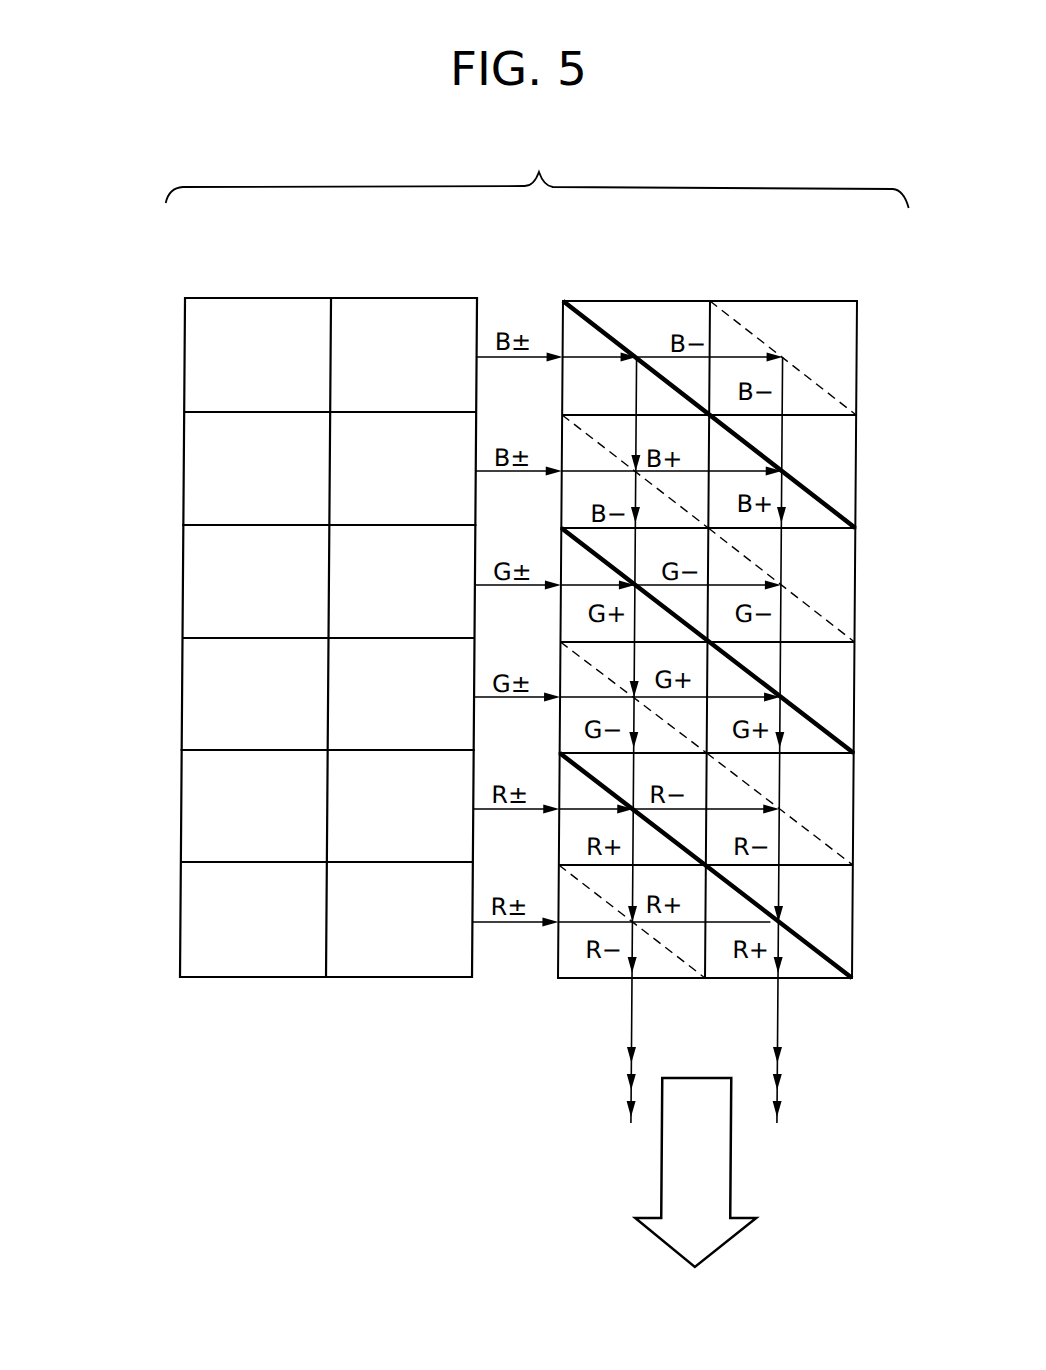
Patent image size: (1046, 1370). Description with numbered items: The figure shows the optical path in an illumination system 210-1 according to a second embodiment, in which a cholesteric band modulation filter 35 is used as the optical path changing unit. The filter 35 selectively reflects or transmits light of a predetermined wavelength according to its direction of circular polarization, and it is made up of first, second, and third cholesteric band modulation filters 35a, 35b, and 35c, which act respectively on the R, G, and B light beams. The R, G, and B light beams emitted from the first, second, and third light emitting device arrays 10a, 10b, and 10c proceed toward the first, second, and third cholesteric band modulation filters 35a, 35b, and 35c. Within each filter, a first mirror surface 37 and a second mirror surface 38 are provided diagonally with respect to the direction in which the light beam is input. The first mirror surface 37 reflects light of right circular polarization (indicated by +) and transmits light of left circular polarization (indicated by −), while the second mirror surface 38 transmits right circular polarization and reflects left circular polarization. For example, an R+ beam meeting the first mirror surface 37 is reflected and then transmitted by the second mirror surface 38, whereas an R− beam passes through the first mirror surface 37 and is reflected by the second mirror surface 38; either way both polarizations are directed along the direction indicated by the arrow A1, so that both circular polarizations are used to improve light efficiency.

The first light emitting device array 10a is at (197, 842).
The second light emitting device array 10b is at (200, 617).
The third light emitting device array 10c is at (200, 392).
The cholesteric band modulation filter 35 is at (746, 589).
The first cholesteric band modulation filter 35a is at (866, 760).
The second cholesteric band modulation filter 35b is at (866, 537).
The third cholesteric band modulation filter 35c is at (866, 308).
The first mirror surface 37 is at (597, 327).
The second mirror surface 38 is at (743, 328).
The illumination system 210-1 is at (538, 168).
The arrow A1 is at (696, 1192).